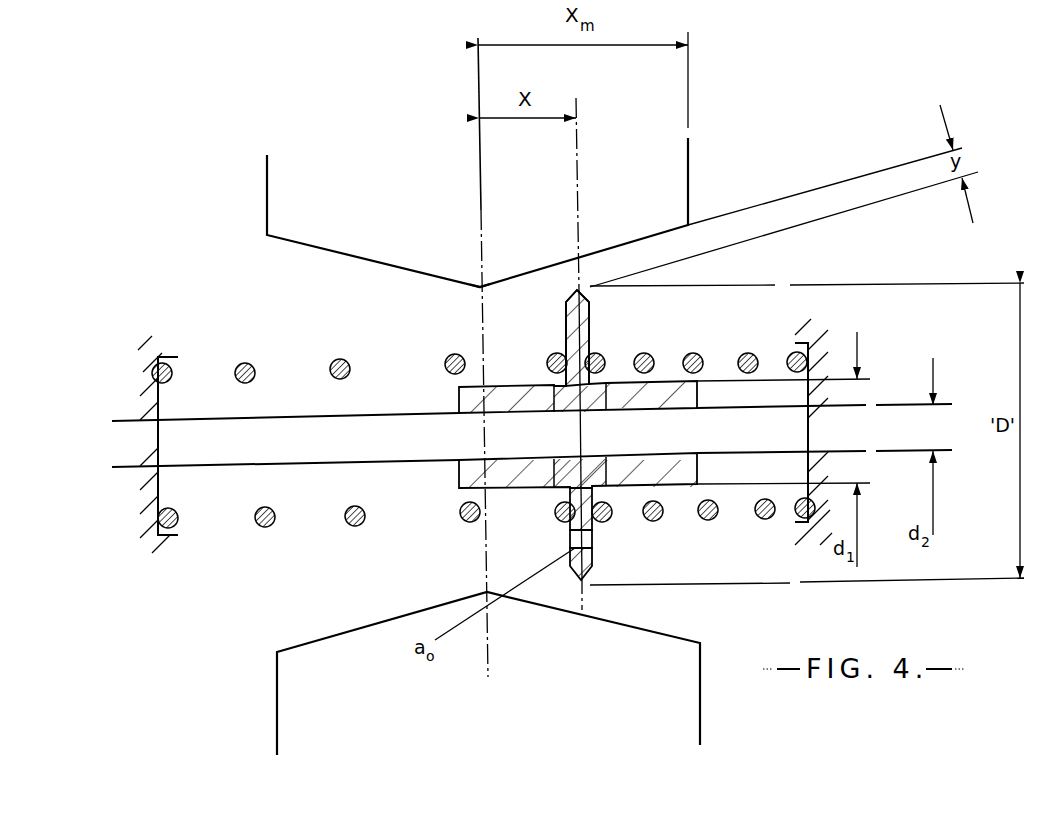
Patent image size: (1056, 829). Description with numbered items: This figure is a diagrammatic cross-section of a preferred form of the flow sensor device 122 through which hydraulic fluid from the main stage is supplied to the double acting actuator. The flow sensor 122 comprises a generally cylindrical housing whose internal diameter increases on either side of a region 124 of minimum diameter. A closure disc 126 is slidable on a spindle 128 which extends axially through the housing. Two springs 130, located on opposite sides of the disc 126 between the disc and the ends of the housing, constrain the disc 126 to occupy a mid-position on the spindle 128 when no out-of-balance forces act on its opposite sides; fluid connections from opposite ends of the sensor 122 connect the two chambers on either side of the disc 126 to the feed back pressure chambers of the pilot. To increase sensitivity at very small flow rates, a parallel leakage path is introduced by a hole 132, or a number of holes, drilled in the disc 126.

The flow sensor device 122 is at (688, 172).
The region of minimum diameter 124 is at (482, 290).
The closure disc 126 is at (591, 310).
The spindle 128 is at (722, 408).
The springs 130 is at (340, 369).
The hole 132 is at (590, 542).